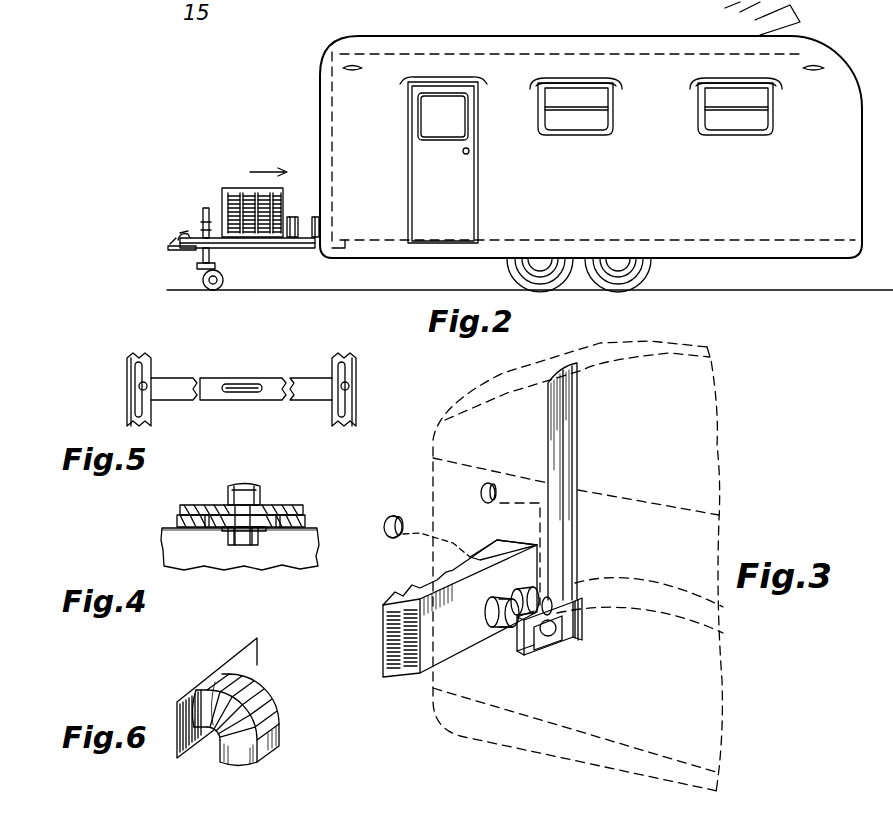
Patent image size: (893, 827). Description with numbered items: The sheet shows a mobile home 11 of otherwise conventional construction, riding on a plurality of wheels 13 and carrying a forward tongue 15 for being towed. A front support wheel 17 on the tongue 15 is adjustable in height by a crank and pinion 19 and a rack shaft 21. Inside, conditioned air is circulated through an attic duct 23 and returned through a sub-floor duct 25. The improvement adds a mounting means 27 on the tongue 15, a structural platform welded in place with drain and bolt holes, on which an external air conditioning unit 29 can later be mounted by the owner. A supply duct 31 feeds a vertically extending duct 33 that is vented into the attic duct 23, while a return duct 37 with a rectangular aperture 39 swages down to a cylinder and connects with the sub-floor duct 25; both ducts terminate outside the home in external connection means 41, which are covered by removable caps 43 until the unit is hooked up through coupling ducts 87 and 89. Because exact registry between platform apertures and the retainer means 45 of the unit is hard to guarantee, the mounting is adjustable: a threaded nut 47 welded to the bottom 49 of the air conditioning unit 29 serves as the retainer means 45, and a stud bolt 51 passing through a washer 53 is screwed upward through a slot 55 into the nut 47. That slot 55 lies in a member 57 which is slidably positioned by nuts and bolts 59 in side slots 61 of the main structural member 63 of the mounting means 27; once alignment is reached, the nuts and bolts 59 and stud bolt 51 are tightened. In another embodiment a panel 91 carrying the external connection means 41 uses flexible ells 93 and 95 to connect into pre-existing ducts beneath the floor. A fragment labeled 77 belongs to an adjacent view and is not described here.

In FIG. 2, the mobile home 11 is at (420, 36).
In FIG. 3, the mobile home 11 is at (712, 350).
In FIG. 2, the wheels 13 is at (652, 272).
In FIG. 2, the tongue 15 is at (202, 236).
In FIG. 2, the front support wheel 17 is at (200, 265).
In FIG. 2, the crank and pinion 19 is at (200, 218).
In FIG. 2, the rack shaft 21 is at (206, 208).
In FIG. 2, the attic duct 23 is at (486, 68).
In FIG. 3, the attic duct 23 is at (500, 393).
In FIG. 2, the sub-floor duct 25 is at (357, 250).
In FIG. 5, the mounting means 27 is at (381, 384).
In FIG. 3, the air conditioning unit 29 is at (400, 702).
In FIG. 3, the supply duct 31 is at (584, 600).
In FIG. 2, the vertically extending duct 33 is at (320, 100).
In FIG. 3, the vertically extending duct 33 is at (572, 448).
In FIG. 3, the return duct 37 is at (520, 617).
In FIG. 3, the rectangular aperture 39 is at (546, 652).
In FIG. 2, the external connection means 41 is at (314, 217).
In FIG. 6, the external connection means 41 is at (205, 694).
In FIG. 3, the external connection means 41 is at (518, 622).
In FIG. 3, the caps 43 is at (393, 516).
In FIG. 4, the retainer means 45 is at (262, 505).
In FIG. 4, the threaded nut 47 is at (258, 494).
In FIG. 4, the bottom 49 is at (186, 505).
In FIG. 4, the stud bolt 51 is at (300, 563).
In FIG. 4, the washer 53 is at (276, 530).
In FIG. 5, the slot 55 is at (248, 387).
In FIG. 4, the slot 55 is at (210, 530).
In FIG. 5, the member 57 is at (176, 378).
In FIG. 5, the nuts and bolts 59 is at (139, 386).
In FIG. 5, the side slots 61 is at (139, 370).
In FIG. 5, the main structural member 63 is at (134, 408).
In FIG. 2, the panel 77 is at (800, 12).
In FIG. 3, the coupling duct 87 is at (524, 596).
In FIG. 3, the coupling duct 89 is at (490, 602).
In FIG. 6, the panel 91 is at (257, 664).
In FIG. 6, the ell 93 is at (232, 758).
In FIG. 6, the ell 95 is at (280, 740).